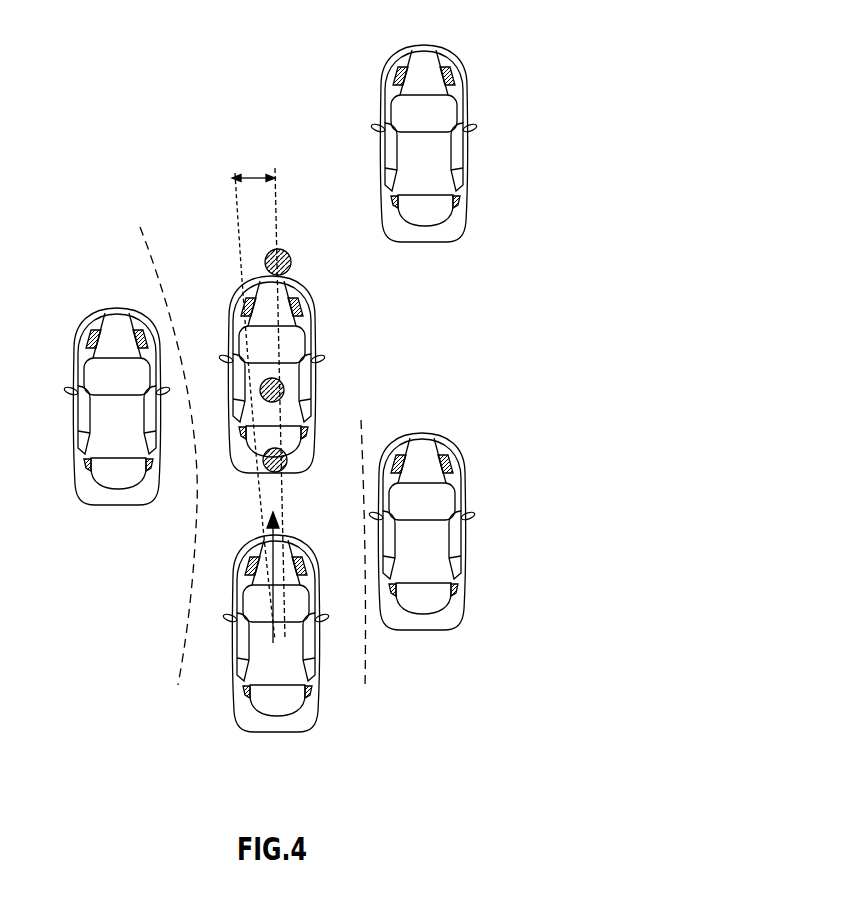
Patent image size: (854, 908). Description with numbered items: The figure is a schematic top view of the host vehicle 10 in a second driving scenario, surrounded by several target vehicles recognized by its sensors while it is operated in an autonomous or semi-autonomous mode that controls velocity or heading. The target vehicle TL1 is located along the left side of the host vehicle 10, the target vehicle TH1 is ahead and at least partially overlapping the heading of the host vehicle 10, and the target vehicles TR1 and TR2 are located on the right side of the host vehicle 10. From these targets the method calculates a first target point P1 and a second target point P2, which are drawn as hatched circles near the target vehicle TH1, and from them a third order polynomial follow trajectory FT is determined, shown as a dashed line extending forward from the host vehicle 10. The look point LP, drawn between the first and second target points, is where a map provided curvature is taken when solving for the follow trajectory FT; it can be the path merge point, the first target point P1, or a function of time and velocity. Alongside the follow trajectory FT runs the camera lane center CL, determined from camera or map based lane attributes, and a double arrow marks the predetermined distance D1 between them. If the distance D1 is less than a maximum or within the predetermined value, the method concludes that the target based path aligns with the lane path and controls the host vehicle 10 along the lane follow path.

The predetermined distance D1 is at (259, 171).
The camera lane center CL is at (237, 215).
The follow trajectory FT is at (277, 225).
The second target point P2 is at (288, 252).
The look point LP is at (284, 387).
The first target point P1 is at (287, 463).
The host vehicle 10 is at (277, 733).
The target vehicle TR2 is at (423, 143).
The target vehicle TH1 is at (271, 374).
The target vehicle TL1 is at (116, 406).
The target vehicle TR1 is at (421, 531).